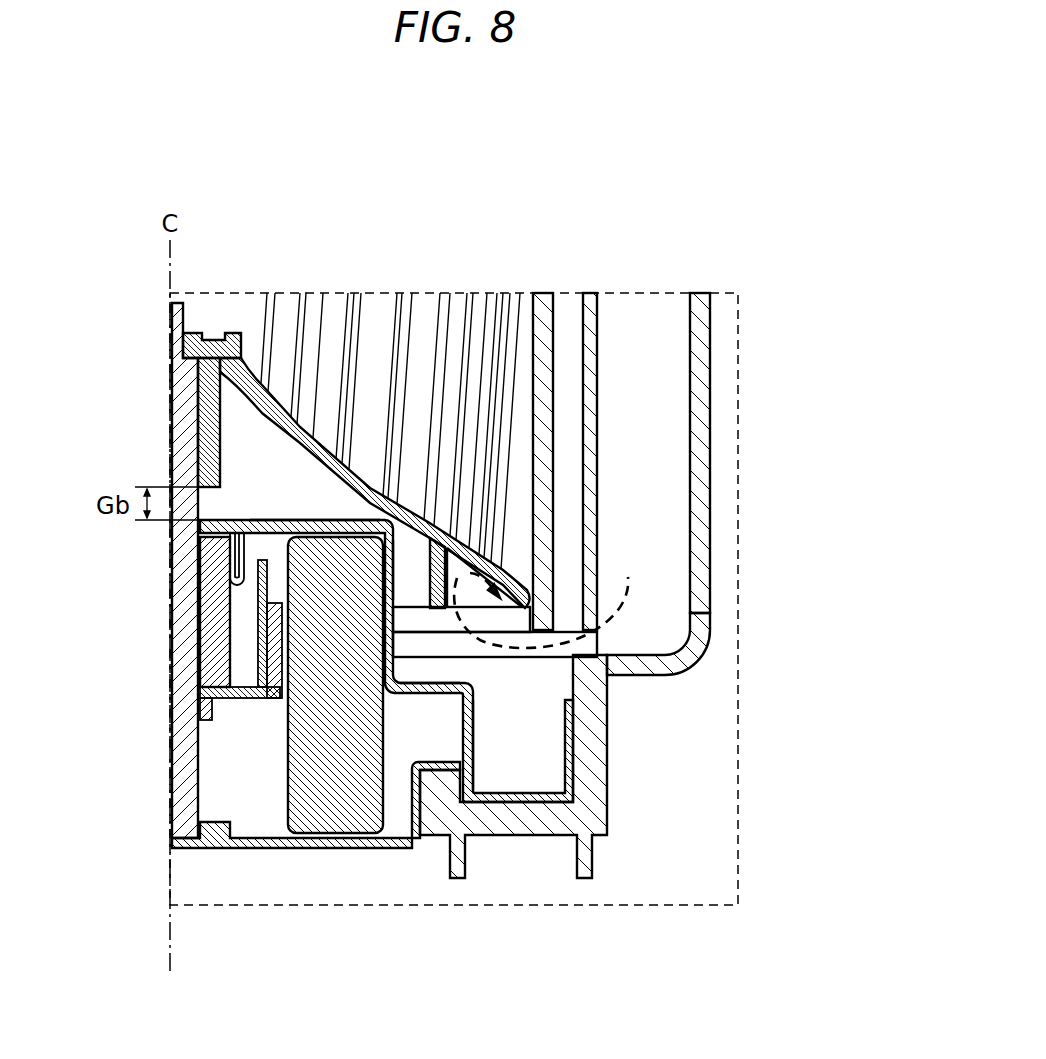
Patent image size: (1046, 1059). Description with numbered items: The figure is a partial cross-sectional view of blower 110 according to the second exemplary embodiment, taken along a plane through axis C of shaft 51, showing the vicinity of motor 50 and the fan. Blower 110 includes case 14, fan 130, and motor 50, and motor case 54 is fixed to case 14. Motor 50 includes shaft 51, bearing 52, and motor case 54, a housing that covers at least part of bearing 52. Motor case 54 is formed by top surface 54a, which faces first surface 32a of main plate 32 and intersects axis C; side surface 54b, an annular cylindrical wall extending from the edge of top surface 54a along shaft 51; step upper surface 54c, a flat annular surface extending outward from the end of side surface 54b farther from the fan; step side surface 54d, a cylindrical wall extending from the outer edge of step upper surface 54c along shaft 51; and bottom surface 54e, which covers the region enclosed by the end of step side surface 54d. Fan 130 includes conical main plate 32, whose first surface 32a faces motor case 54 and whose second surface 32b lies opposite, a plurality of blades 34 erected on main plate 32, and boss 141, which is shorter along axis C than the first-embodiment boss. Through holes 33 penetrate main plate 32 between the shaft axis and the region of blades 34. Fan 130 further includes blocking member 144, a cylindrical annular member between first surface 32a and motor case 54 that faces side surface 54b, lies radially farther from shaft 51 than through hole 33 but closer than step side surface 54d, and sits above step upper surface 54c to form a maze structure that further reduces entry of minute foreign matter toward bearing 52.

The blower 110 is at (730, 143).
The fan 130 is at (623, 363).
The case 14 is at (680, 670).
The boss 141 is at (243, 312).
The blocking member 144 is at (440, 570).
The main plate 32 is at (527, 580).
The first surface 32a is at (267, 423).
The second surface 32b is at (507, 563).
The through hole 33 is at (427, 522).
The blades 34 is at (497, 318).
The motor 50 is at (390, 867).
The shaft 51 is at (185, 803).
The bearing 52 is at (212, 557).
The motor case 54 is at (236, 848).
The top surface 54a is at (307, 522).
The side surface 54b is at (398, 565).
The step upper surface 54c is at (420, 680).
The step side surface 54d is at (475, 758).
The bottom surface 54e is at (305, 850).